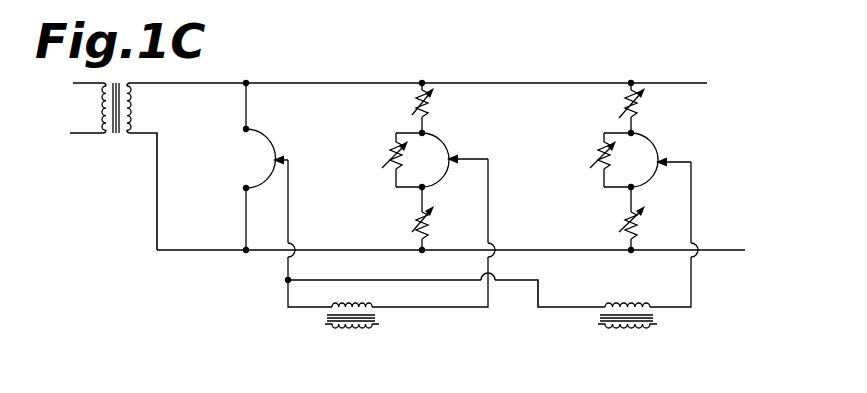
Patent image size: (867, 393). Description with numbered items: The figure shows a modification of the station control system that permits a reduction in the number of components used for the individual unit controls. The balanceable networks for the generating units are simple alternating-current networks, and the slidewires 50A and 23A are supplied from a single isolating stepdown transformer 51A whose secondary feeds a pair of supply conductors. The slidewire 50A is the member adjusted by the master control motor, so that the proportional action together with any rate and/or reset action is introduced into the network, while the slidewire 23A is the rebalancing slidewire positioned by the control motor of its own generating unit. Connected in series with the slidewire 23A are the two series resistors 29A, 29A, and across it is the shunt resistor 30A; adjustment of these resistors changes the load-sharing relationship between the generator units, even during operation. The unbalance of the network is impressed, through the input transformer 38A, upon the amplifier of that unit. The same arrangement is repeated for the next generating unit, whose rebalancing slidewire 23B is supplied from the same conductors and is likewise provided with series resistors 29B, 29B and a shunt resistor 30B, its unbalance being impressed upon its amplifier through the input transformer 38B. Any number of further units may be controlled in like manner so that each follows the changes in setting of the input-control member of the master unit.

The isolating stepdown transformer 51A is at (116, 136).
The slidewire 50A is at (262, 138).
The series resistor 29A is at (414, 96).
The slidewire 23A is at (445, 141).
The shunt resistor 30A is at (390, 149).
The input transformer 38A is at (377, 318).
The series resistor 29B is at (620, 96).
The slidewire 23B is at (652, 145).
The shunt resistor 30B is at (601, 150).
The input transformer 38B is at (652, 320).